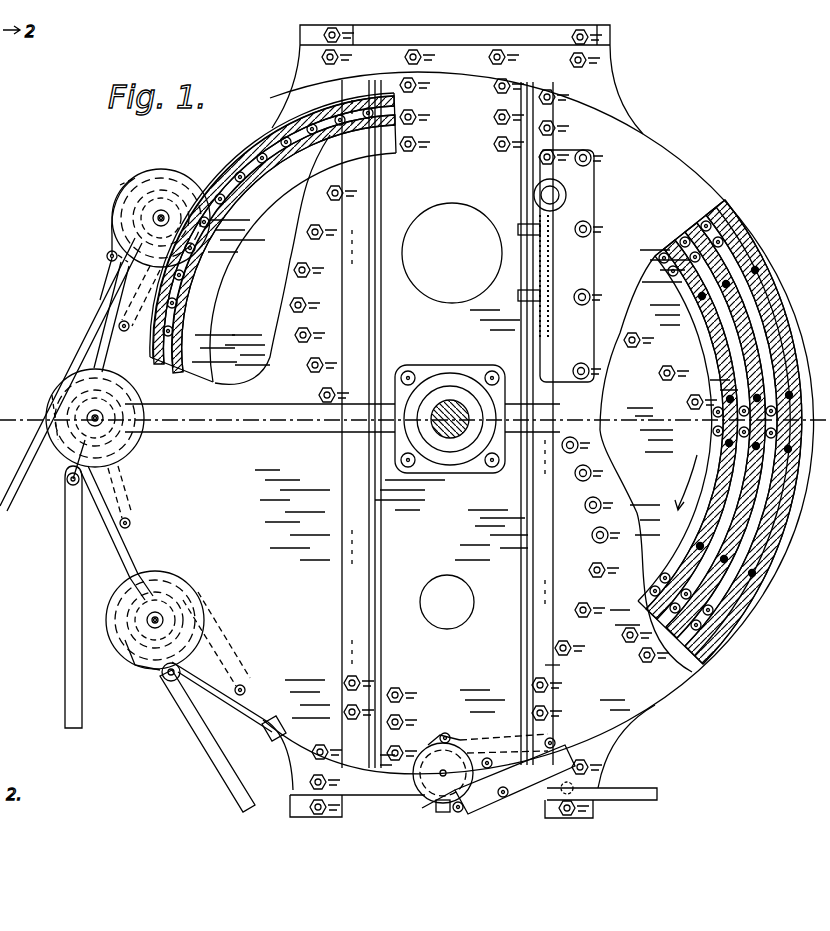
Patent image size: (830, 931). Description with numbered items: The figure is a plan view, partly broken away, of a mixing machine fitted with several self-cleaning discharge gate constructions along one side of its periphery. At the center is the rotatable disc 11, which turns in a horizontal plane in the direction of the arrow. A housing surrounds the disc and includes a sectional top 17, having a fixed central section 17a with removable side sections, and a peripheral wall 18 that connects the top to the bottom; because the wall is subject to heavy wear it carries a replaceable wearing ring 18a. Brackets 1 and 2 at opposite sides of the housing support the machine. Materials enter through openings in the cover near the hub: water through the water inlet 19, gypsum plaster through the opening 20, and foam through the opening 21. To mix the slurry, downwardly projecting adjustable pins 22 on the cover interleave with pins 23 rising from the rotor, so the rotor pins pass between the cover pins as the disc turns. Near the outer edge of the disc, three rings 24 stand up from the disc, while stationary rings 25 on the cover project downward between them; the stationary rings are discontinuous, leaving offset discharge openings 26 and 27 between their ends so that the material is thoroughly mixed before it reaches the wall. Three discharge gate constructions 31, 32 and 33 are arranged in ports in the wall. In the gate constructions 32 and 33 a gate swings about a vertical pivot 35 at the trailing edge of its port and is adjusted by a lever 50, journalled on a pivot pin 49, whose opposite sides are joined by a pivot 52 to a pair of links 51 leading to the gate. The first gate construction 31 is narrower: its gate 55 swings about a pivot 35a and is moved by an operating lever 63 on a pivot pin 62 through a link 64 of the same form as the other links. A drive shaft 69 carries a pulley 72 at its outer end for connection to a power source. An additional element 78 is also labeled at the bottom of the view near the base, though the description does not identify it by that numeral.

The bracket 1 is at (610, 82).
The bracket 2 is at (604, 760).
The rotatable disc 11 is at (643, 342).
The sectional top 17 is at (640, 146).
The fixed central section 17a is at (545, 680).
The peripheral wall 18 is at (756, 584).
The replaceable wearing ring 18a is at (746, 606).
The water inlet 19 is at (560, 228).
The opening 20 is at (468, 215).
The opening 21 is at (466, 612).
The adjustable pins 22 is at (314, 356).
The pins 23 is at (692, 402).
The rings 24 is at (725, 268).
The rings 25 is at (745, 296).
The discharge opening 26 is at (340, 187).
The discharge opening 27 is at (237, 200).
The discharge gate construction 31 is at (134, 678).
The discharge gate construction 32 is at (55, 477).
The discharge gate construction 33 is at (104, 214).
The vertical pivot 35 is at (124, 332).
The pivot 35a is at (248, 688).
The pivot pin 49 is at (120, 202).
The lever 50 is at (63, 312).
The links 51 is at (106, 264).
The pivot 52 is at (108, 256).
The gate 55 is at (212, 644).
The pivot pin 62 is at (126, 652).
The operating lever 63 is at (200, 746).
The link 64 is at (168, 682).
The drive shaft 69 is at (165, 216).
The pulley 72 is at (152, 170).
The drive unit 78 is at (443, 742).